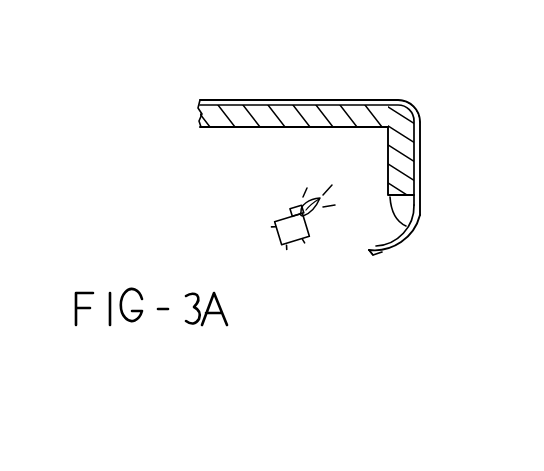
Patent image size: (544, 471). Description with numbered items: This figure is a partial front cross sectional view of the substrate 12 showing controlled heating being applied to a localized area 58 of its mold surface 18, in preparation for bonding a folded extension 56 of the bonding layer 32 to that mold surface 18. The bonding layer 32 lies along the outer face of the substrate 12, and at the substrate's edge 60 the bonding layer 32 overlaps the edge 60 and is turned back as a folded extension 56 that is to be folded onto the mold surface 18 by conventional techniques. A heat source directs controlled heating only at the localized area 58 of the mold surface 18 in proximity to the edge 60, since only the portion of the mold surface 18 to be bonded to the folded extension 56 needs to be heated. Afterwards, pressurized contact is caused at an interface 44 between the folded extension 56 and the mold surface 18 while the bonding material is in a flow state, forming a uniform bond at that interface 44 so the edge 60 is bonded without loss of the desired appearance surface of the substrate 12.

The substrate 12 is at (303, 107).
The bonding layer 32 is at (285, 61).
The interface 44 is at (392, 137).
The edge 60 is at (402, 227).
The folded extension 56 is at (380, 253).
The mold surface 18 is at (242, 127).
The localized area 58 is at (388, 137).